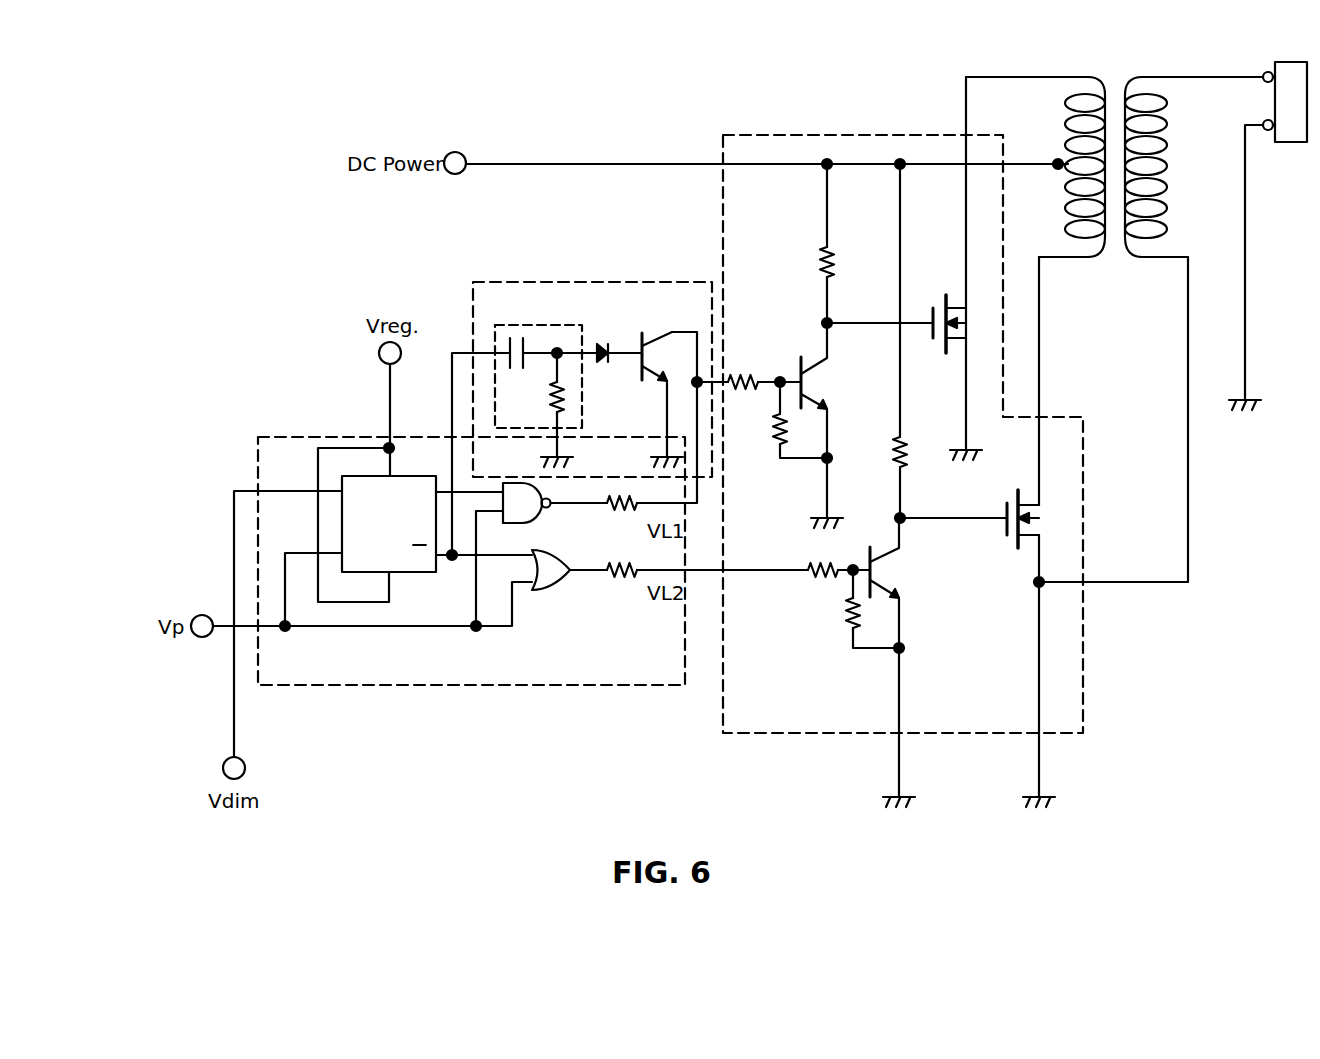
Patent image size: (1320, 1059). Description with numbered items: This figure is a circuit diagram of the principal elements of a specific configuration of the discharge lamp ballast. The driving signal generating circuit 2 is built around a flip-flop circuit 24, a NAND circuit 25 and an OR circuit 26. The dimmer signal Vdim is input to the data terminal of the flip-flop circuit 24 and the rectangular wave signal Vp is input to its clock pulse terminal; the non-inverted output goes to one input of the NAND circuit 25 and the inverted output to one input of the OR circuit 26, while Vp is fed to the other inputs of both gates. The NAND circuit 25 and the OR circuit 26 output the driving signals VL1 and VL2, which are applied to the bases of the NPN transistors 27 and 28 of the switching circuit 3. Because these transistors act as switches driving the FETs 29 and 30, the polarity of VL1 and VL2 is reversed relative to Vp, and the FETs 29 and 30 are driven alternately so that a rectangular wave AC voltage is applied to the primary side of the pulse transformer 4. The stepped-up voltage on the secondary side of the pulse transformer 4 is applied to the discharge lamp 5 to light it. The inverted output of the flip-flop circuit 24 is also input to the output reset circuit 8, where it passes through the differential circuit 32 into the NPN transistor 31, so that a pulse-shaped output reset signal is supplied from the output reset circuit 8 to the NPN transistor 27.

The driving signal generating circuit 2 is at (587, 686).
The switching circuit 3 is at (1083, 660).
The pulse transformer 4 is at (1113, 268).
The discharge lamp 5 is at (1287, 145).
The output reset circuit 8 is at (530, 282).
The flip-flop circuit 24 is at (437, 476).
The NAND circuit 25 is at (535, 520).
The OR circuit 26 is at (557, 586).
The NPN transistor 27 is at (812, 386).
The NPN transistor 28 is at (898, 578).
The FET 29 is at (968, 316).
The FET 30 is at (1007, 546).
The NPN transistor 31 is at (640, 334).
The differential circuit 32 is at (518, 325).